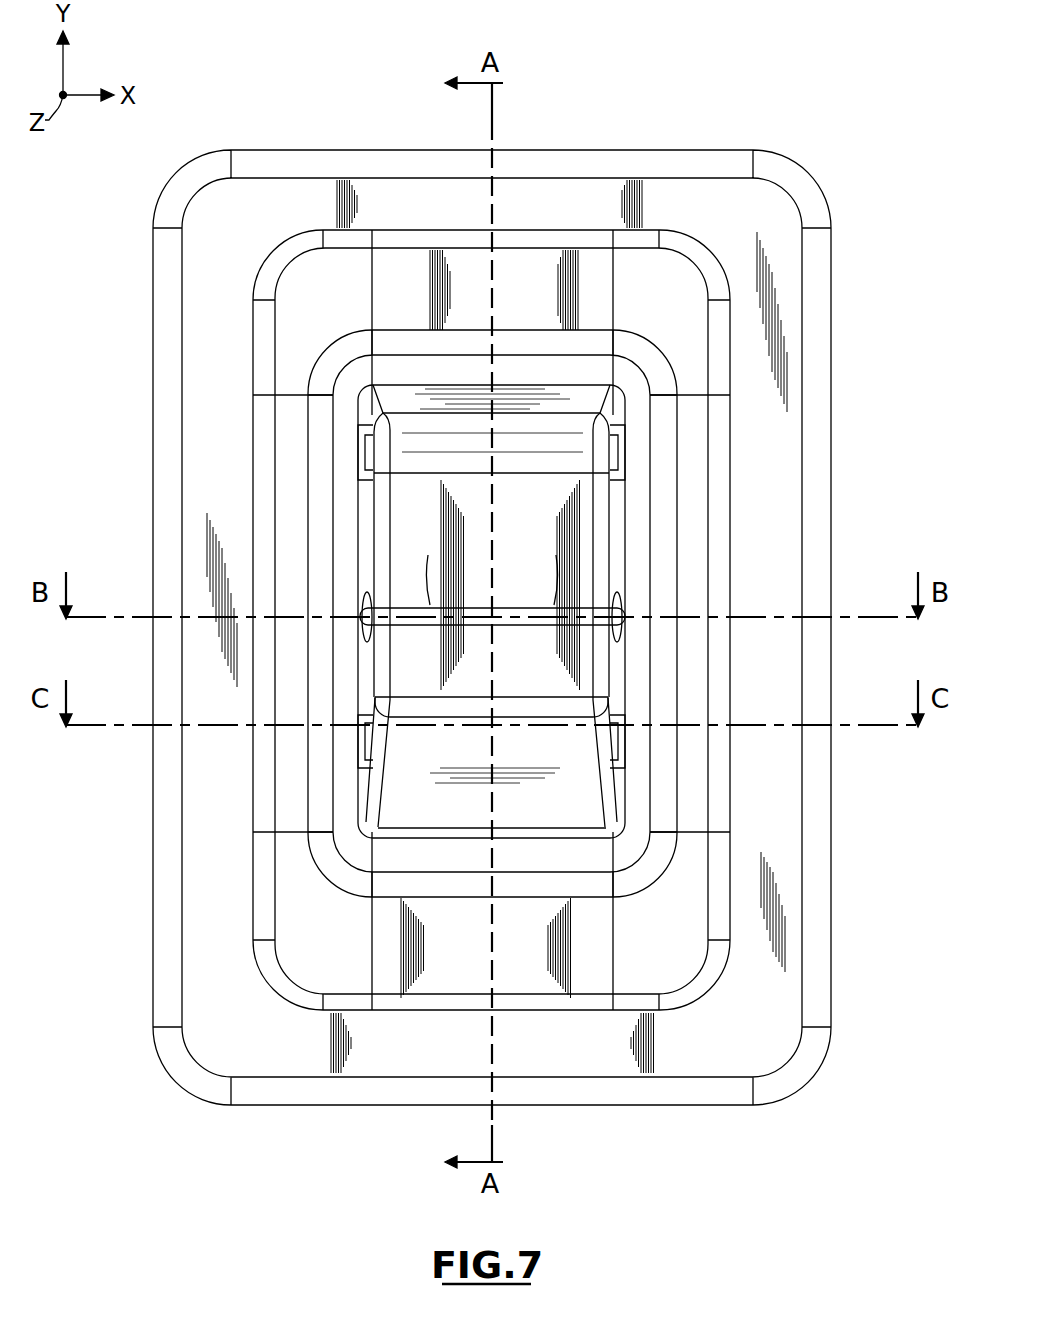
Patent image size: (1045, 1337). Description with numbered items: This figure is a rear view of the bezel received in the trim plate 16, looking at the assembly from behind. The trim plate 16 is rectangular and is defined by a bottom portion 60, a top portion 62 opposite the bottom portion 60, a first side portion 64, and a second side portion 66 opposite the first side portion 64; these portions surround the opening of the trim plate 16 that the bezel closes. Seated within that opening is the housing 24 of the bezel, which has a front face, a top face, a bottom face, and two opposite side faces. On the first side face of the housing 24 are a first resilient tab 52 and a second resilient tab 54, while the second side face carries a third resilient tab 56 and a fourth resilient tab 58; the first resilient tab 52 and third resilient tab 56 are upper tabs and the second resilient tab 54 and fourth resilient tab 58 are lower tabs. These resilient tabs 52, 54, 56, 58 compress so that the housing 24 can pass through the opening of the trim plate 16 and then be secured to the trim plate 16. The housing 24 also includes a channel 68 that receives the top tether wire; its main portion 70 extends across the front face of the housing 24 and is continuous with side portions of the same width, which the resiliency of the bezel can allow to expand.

The trim plate 16 is at (768, 207).
The housing 24 is at (532, 287).
The first resilient tab 52 is at (623, 448).
The second resilient tab 54 is at (625, 745).
The third resilient tab 56 is at (360, 453).
The fourth resilient tab 58 is at (358, 745).
The bottom portion 60 is at (676, 1045).
The top portion 62 is at (400, 205).
The first side portion 64 is at (785, 815).
The second side portion 66 is at (202, 490).
The channel 68 is at (447, 600).
The main portion 70 is at (547, 600).